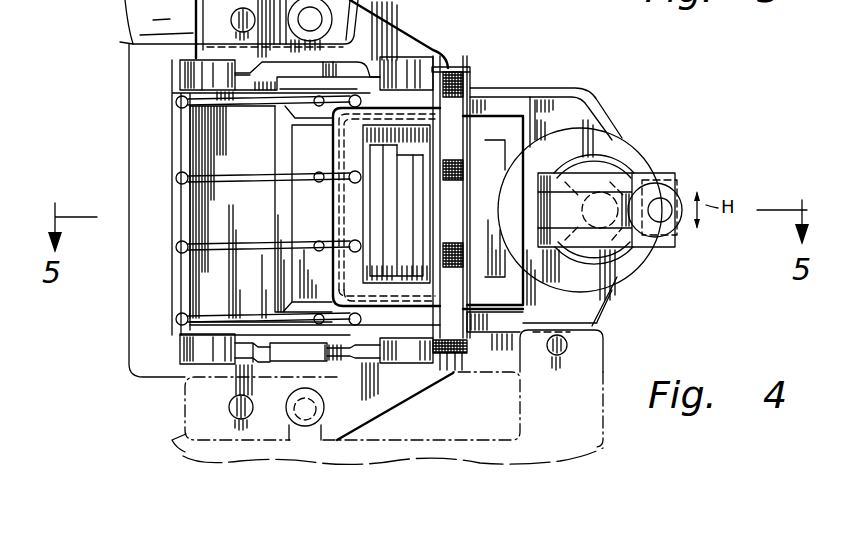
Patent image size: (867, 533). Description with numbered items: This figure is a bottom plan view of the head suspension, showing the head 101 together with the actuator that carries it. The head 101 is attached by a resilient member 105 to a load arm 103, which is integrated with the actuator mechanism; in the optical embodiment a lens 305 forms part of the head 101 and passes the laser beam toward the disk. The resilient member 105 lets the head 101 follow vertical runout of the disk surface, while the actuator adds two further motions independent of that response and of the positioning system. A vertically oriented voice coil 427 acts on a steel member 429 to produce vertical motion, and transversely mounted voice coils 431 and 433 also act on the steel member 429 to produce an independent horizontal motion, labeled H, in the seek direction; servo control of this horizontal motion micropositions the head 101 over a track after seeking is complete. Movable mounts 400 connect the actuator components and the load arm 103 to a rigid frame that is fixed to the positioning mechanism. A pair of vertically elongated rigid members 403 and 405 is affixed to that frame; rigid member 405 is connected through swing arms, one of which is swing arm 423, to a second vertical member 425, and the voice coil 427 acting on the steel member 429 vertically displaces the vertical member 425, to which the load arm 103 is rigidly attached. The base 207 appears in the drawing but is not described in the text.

The head 101 is at (678, 178).
The load arm 103 is at (580, 115).
The resilient member 105 is at (628, 157).
The base housing 207 is at (185, 417).
The lens 305 is at (662, 215).
The movable mounts 400 is at (182, 79).
The rigid member 403 is at (180, 68).
The rigid member 405 is at (180, 352).
The swing arm 423 is at (343, 363).
The second vertical member 425 is at (417, 355).
The voice coil 427 is at (407, 124).
The steel member 429 is at (432, 70).
The voice coil 431 is at (448, 343).
The voice coil 433 is at (452, 90).